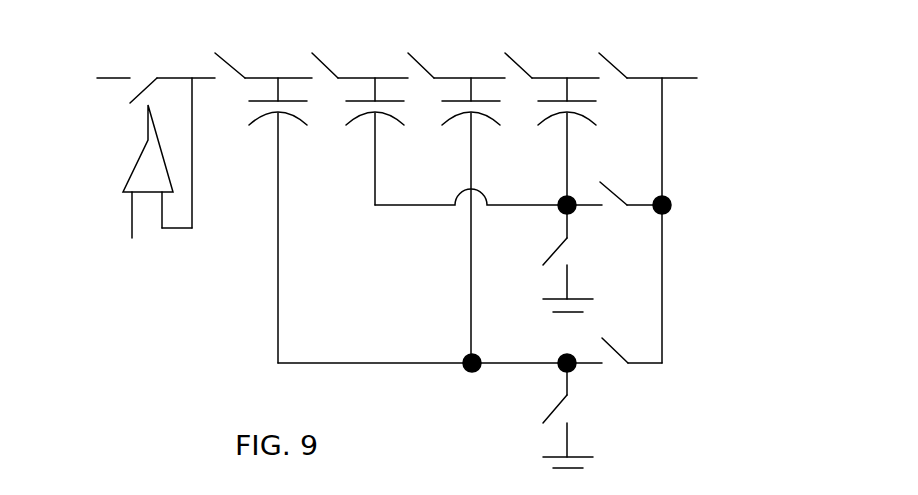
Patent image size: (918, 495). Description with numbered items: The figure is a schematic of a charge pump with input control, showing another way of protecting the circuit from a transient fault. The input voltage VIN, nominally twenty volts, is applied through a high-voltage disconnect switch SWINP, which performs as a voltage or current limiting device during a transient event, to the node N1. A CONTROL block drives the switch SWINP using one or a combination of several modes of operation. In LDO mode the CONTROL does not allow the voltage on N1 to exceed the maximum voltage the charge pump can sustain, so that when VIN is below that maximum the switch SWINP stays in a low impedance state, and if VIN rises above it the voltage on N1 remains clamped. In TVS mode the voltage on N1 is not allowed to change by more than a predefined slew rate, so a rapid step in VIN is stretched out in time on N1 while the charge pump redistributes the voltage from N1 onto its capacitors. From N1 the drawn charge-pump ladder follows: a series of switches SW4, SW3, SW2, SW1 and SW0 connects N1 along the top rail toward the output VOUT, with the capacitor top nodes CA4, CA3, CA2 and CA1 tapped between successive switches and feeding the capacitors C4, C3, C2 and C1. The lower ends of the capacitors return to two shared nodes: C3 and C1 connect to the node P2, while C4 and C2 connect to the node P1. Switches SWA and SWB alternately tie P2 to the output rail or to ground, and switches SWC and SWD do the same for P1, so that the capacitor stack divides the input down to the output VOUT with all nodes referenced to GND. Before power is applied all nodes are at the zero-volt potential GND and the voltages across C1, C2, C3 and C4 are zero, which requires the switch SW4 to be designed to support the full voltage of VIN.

The input voltage VIN is at (77, 70).
The high-voltage disconnect switch SWINP is at (156, 64).
The node N1 is at (177, 139).
The control CONTROL is at (129, 188).
The switch SW4 is at (254, 52).
The capacitor node CA4 is at (271, 75).
The capacitor C4 is at (272, 232).
The switch SW3 is at (350, 52).
The capacitor node CA3 is at (370, 77).
The capacitor C3 is at (373, 153).
The switch SW2 is at (447, 52).
The capacitor node CA2 is at (471, 77).
The capacitor C2 is at (470, 232).
The switch SW1 is at (542, 52).
The capacitor node CA1 is at (568, 77).
The capacitor C1 is at (566, 153).
The switch SW0 is at (643, 52).
The output voltage VOUT=VIN/5, 4V VOUT is at (745, 209).
The node P2 is at (488, 196).
The switch SWA is at (621, 183).
The switch SWB is at (548, 258).
The node P1 is at (440, 357).
The switch SWC is at (625, 341).
The switch SWD is at (537, 393).
The ground GND is at (599, 444).